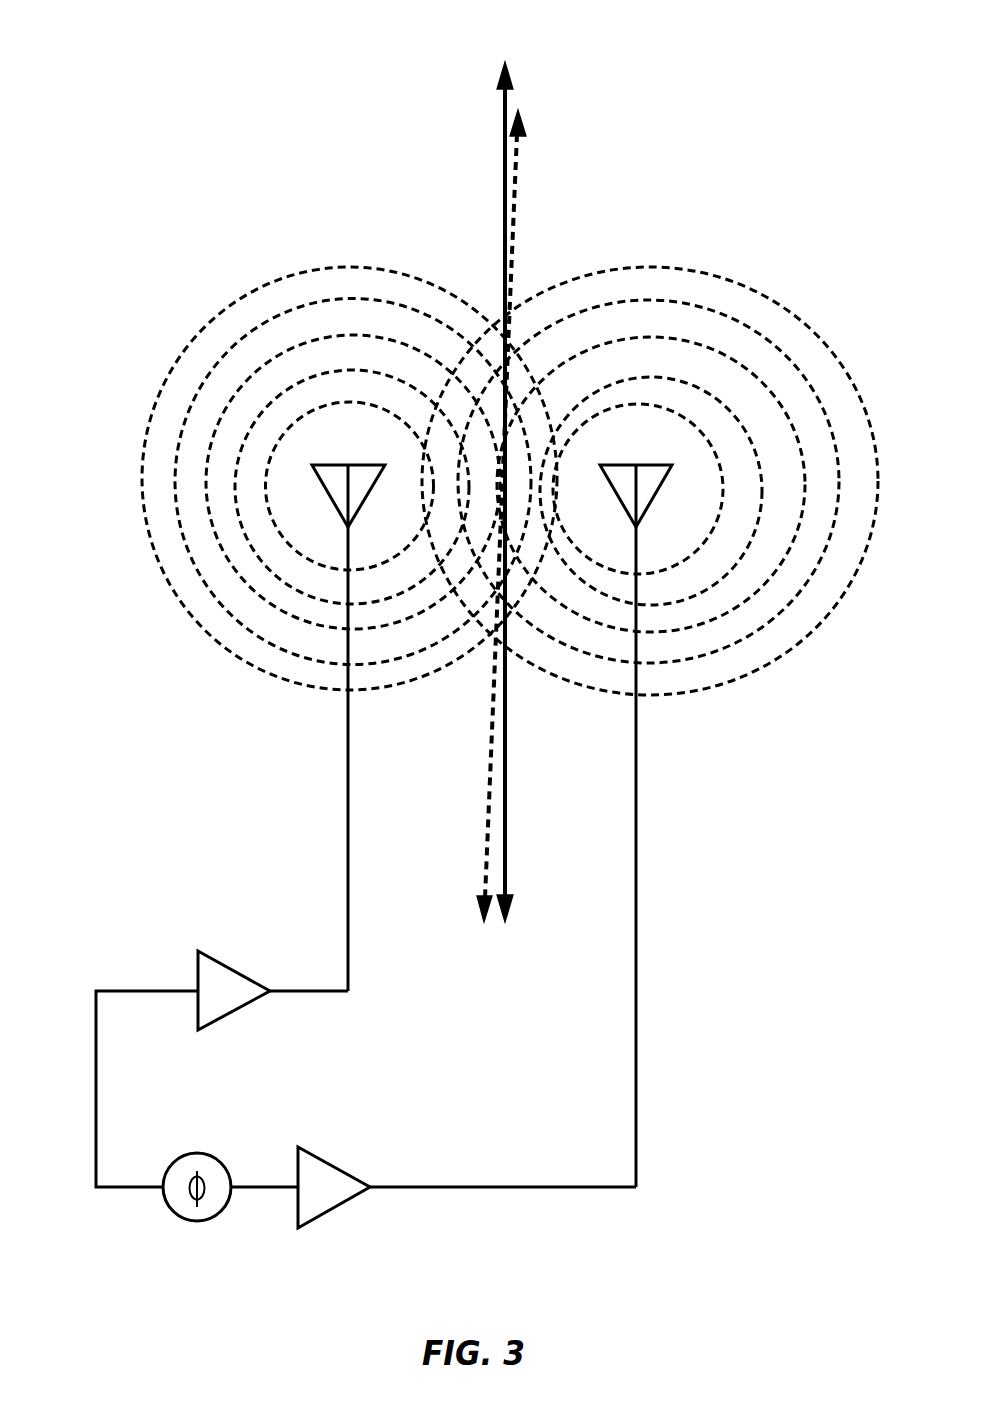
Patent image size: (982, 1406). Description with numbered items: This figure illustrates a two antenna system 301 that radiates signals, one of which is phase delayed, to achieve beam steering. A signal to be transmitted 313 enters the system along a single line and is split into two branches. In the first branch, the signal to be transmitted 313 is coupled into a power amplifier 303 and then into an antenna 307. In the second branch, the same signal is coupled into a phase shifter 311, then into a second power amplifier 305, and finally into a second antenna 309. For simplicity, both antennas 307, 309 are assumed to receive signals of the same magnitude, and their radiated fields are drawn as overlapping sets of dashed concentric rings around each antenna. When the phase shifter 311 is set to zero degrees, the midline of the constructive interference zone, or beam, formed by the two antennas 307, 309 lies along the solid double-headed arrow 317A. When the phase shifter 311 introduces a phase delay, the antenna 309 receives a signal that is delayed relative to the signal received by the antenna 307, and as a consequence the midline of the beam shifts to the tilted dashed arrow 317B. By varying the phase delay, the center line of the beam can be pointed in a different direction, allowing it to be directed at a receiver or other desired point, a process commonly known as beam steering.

The two antenna system 301 is at (855, 41).
The power amplifier 303 is at (229, 965).
The power amplifier 305 is at (327, 1162).
The antenna 307 is at (348, 812).
The antenna 309 is at (636, 812).
The phase shifter 311 is at (197, 1153).
The signal to be transmitted 313 is at (95, 1090).
The midline of the constructive interference zone (beam) 317A is at (503, 163).
The shifted midline of the beam 317B is at (519, 176).